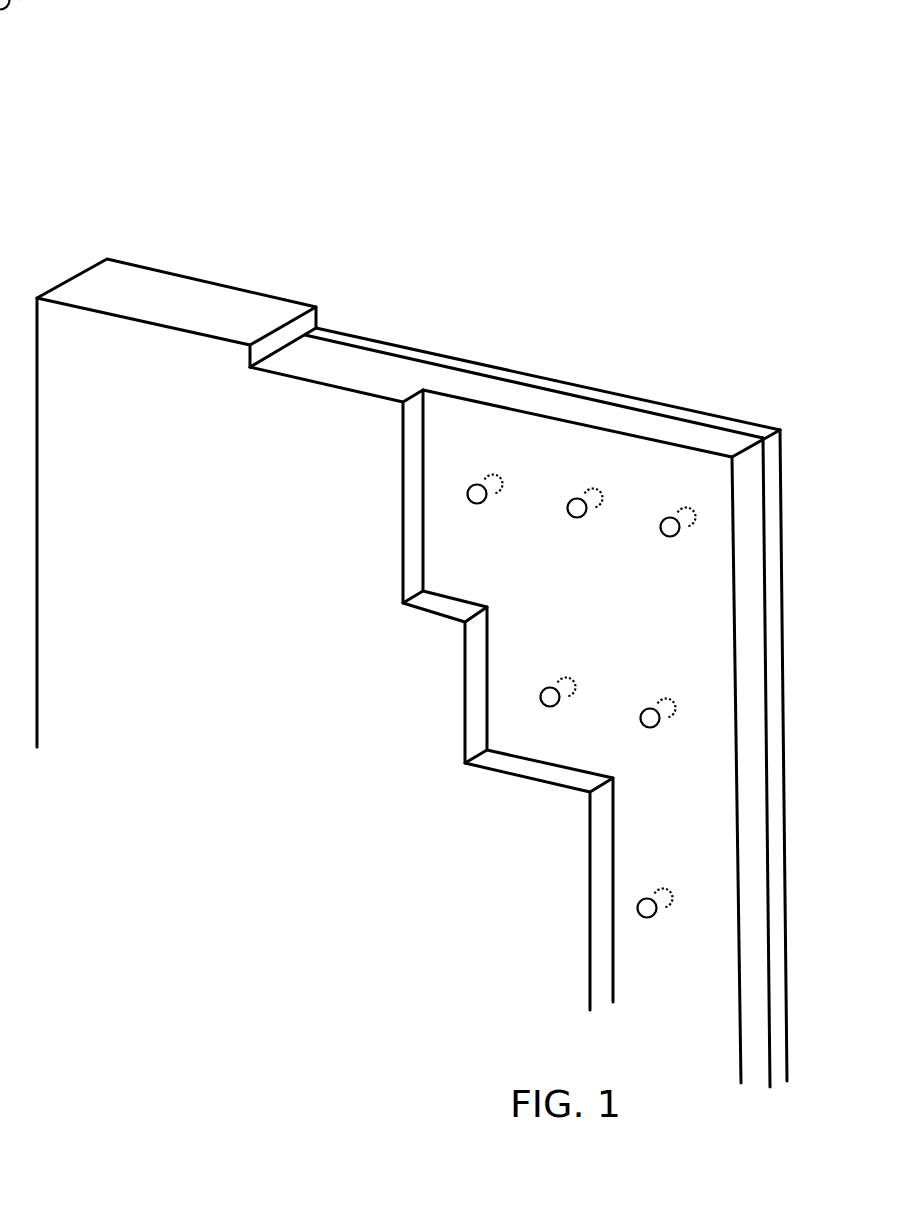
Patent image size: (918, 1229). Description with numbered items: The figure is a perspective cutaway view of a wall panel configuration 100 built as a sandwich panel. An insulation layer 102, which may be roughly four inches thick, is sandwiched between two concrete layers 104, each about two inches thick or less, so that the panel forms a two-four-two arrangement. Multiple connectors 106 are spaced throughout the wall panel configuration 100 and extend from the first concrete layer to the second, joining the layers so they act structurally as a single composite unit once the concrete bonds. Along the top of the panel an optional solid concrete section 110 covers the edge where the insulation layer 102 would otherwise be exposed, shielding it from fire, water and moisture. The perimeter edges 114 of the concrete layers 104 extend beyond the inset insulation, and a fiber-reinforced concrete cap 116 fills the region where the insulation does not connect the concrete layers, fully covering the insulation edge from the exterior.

The wall panel configuration 100 is at (252, 104).
The insulation layer 102 is at (343, 358).
The concrete layers 104 is at (132, 392).
The connectors 106 is at (578, 497).
The solid concrete section 110 is at (135, 559).
The perimeter edges 114 is at (355, 390).
The cap 116 is at (203, 295).